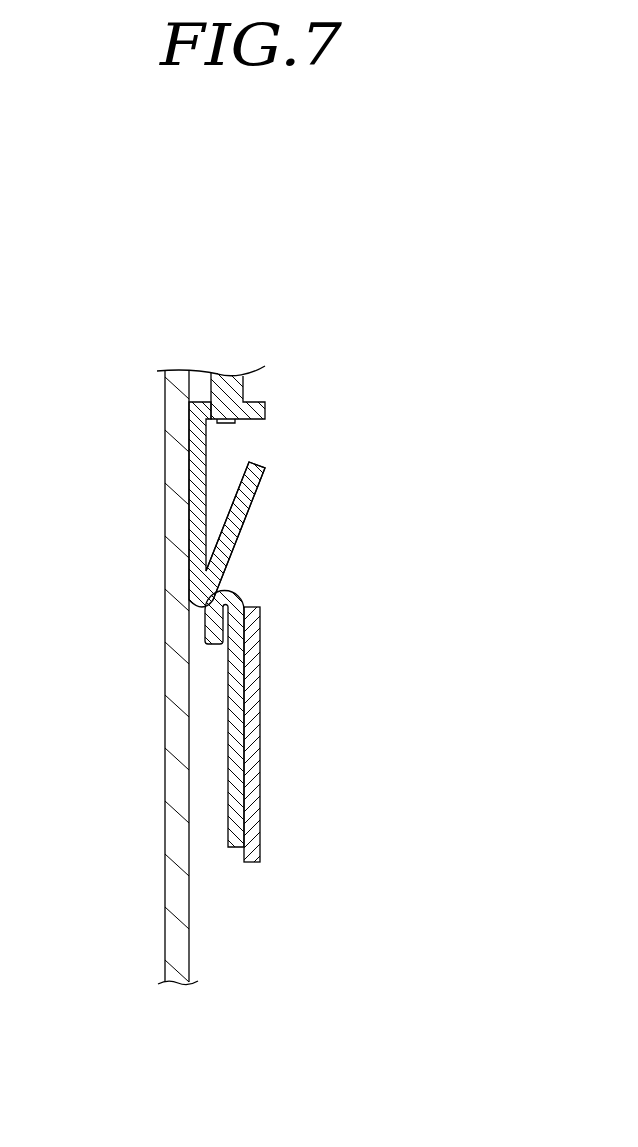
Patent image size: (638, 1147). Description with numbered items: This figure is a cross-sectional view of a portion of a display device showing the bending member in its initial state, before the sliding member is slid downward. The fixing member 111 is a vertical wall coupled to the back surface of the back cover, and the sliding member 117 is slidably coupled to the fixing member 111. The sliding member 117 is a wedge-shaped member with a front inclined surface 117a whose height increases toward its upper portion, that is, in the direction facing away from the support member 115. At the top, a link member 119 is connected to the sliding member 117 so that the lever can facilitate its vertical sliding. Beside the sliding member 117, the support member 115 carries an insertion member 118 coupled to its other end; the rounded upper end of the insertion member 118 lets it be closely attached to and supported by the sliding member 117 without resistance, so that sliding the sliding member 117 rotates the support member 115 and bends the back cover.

The fixing member 111 is at (180, 788).
The support member 115 is at (252, 741).
The sliding member 117 is at (198, 466).
The front inclined surface 117a is at (245, 502).
The insertion member 118 is at (237, 707).
The link member 119 is at (235, 388).